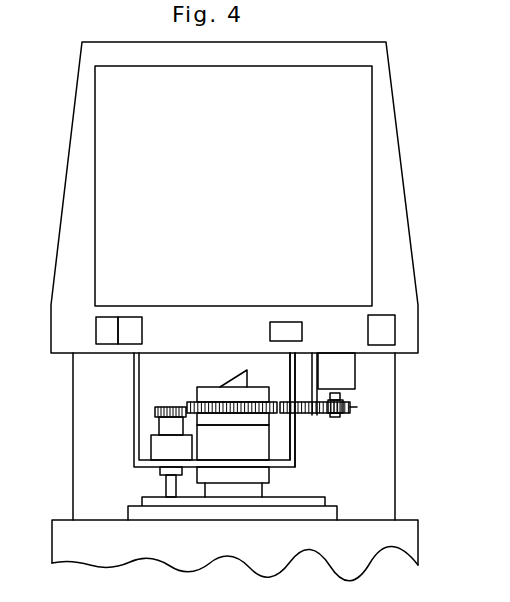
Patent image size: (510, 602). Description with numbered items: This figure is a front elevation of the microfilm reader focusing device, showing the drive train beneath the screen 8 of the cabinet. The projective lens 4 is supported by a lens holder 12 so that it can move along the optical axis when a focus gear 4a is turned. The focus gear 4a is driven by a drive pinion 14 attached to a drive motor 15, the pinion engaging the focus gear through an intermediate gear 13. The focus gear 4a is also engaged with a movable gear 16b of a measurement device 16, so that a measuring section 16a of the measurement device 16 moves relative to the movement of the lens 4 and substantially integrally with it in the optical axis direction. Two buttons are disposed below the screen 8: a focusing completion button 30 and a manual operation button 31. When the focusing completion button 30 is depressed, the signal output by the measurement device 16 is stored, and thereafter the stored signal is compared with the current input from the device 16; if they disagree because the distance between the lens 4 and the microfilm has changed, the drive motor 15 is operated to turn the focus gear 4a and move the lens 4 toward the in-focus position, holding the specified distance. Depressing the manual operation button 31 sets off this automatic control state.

The projective lens 4 is at (222, 447).
The focus gear 4a is at (258, 402).
The screen 8 is at (248, 223).
The lens holder 12 is at (147, 467).
The intermediate gear 13 is at (299, 408).
The drive pinion 14 is at (355, 405).
The drive motor 15 is at (345, 377).
The measurement device 16 is at (165, 448).
The measuring section 16a is at (173, 500).
The movable gear 16b is at (156, 413).
The focusing completion button 30 is at (110, 327).
The manual operation button 31 is at (128, 325).